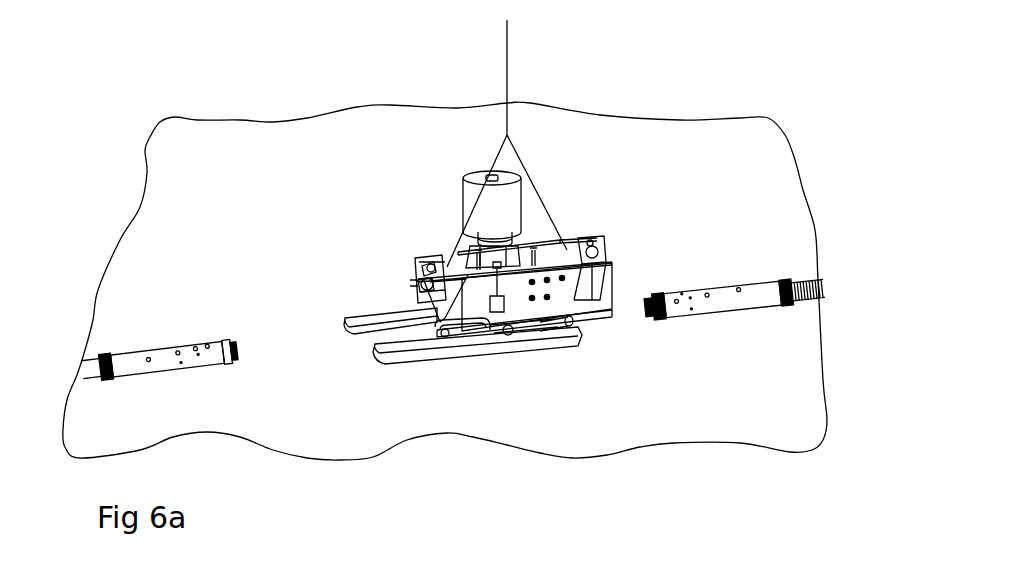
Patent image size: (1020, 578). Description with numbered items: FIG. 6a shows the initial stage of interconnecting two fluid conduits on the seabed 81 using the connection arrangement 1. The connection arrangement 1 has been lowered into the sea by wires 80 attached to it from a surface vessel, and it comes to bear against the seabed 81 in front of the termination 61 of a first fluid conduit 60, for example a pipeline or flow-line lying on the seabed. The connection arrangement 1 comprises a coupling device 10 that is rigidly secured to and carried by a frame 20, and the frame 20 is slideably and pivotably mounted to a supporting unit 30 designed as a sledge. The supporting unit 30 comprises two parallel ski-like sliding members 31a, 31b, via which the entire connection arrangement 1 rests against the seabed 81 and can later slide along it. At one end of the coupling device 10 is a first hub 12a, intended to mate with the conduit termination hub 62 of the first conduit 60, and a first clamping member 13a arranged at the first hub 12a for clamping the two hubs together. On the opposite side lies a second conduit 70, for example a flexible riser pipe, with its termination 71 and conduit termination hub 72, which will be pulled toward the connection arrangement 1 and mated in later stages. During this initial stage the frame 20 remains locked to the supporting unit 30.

The connection arrangement 1 is at (577, 190).
The coupling device 10 is at (585, 223).
The first hub 12a is at (420, 284).
The first clamping member 13a is at (425, 268).
The frame 20 is at (470, 292).
The supporting unit 30 is at (388, 367).
The sliding member 31a is at (422, 360).
The sliding member 31b is at (363, 321).
The first fluid conduit 60 is at (186, 364).
The conduit termination 61 is at (165, 359).
The conduit termination hub 62 is at (234, 351).
The second conduit 70 is at (735, 302).
The conduit termination 71 is at (803, 305).
The conduit termination hub 72 is at (649, 307).
The wires 80 is at (508, 80).
The seabed 81 is at (579, 418).